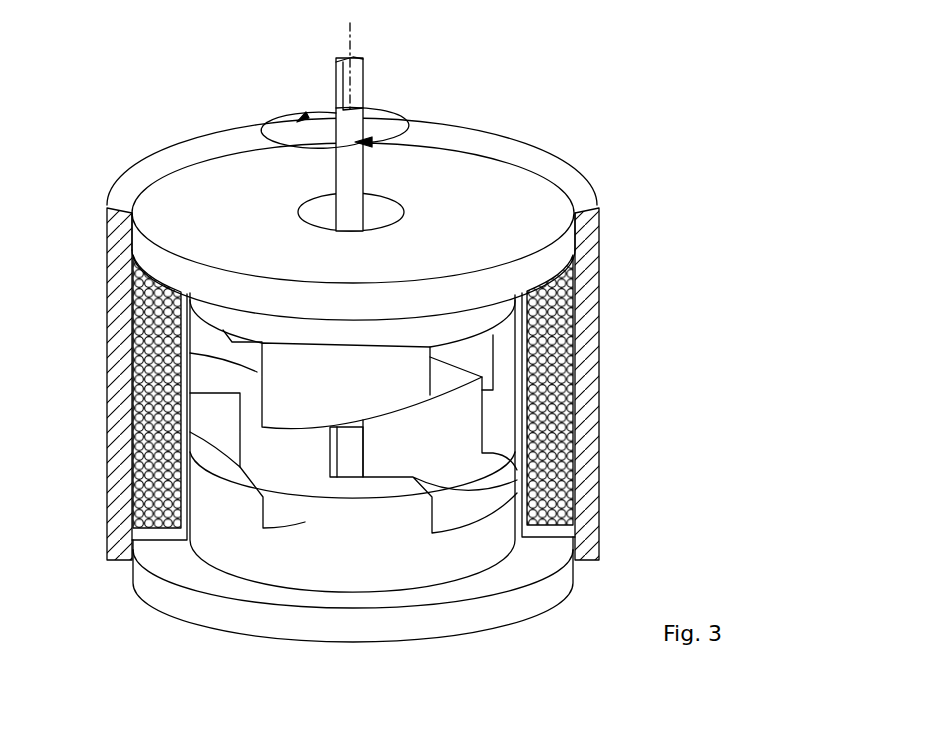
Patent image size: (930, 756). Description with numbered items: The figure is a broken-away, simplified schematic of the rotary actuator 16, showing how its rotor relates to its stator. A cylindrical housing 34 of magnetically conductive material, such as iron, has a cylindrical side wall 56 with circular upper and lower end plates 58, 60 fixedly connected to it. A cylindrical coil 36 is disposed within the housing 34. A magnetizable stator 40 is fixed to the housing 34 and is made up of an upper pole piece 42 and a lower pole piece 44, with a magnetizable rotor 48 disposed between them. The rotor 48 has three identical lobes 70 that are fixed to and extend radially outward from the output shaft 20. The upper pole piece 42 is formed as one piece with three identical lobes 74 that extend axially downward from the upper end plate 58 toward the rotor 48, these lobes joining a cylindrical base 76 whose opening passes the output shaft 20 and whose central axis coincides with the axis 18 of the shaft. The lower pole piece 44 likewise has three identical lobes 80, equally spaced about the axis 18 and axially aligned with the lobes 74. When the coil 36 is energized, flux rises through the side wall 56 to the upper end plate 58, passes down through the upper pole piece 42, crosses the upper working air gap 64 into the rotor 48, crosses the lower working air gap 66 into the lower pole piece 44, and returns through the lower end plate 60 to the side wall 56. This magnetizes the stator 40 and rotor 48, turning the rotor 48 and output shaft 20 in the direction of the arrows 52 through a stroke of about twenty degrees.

The rotary actuator 16 is at (576, 164).
The axis 18 is at (352, 34).
The output shaft 20 is at (363, 172).
The housing 34 is at (602, 250).
The coil 36 is at (560, 363).
The stator 40 is at (474, 550).
The upper pole piece 42 is at (368, 339).
The lower pole piece 44 is at (288, 562).
The rotor 48 is at (462, 455).
The arrows 52 is at (393, 112).
The side wall 56 is at (587, 287).
The upper end plate 58 is at (185, 187).
The lower end plate 60 is at (468, 613).
The upper working air gap 64 is at (410, 417).
The lower working air gap 66 is at (385, 490).
The lobes 70 is at (470, 418).
The lobes 74 is at (485, 355).
The base 76 is at (488, 317).
The lobes 80 is at (487, 443).